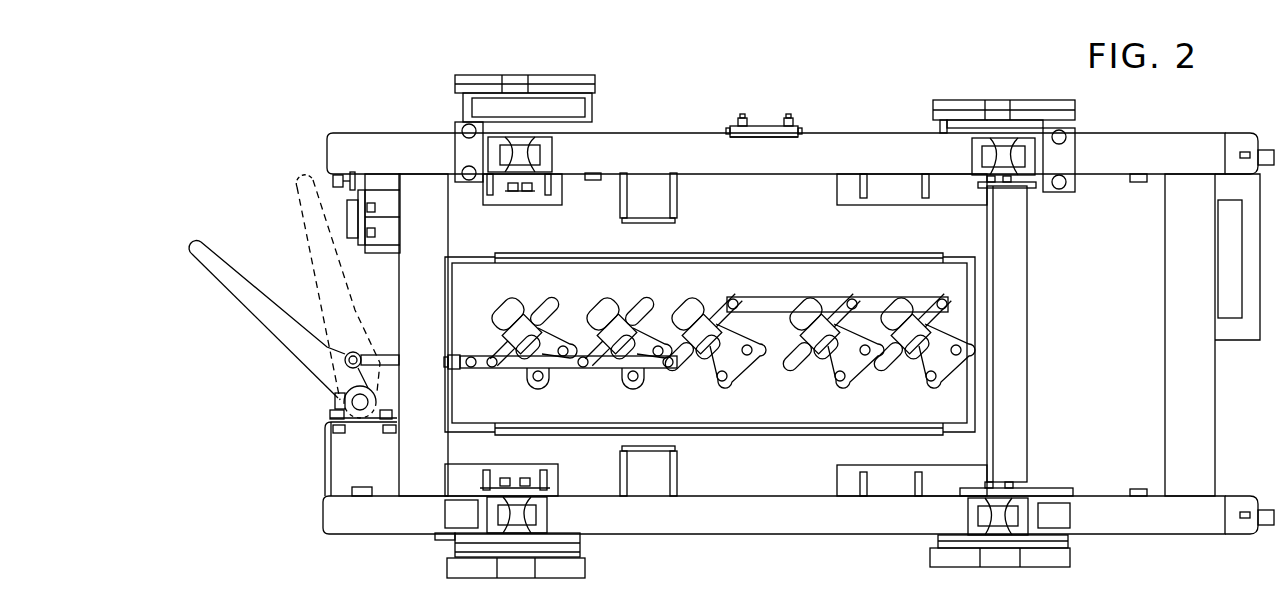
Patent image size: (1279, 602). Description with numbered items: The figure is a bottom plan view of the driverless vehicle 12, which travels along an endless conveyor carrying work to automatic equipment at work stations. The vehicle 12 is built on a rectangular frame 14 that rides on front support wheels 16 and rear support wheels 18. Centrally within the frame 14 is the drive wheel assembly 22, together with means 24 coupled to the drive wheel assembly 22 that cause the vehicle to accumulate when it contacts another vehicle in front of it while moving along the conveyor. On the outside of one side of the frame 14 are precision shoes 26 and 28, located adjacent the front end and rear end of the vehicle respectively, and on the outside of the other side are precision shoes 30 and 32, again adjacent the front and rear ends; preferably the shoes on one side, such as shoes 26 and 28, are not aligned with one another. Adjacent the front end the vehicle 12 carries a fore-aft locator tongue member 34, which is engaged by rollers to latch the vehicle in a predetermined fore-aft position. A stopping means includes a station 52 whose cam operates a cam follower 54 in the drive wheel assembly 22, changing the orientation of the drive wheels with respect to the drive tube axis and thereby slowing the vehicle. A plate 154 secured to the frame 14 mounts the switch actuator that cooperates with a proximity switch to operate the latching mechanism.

The vehicle 12 is at (1187, 125).
The frame 14 is at (727, 168).
The front support wheels 16 is at (538, 151).
The rear support wheels 18 is at (990, 158).
The drive wheel assembly 22 is at (518, 291).
The means for causing accumulation 24 is at (266, 348).
The precision shoe 26 is at (560, 573).
The precision shoe 28 is at (1012, 562).
The precision shoe 30 is at (553, 75).
The precision shoe 32 is at (1012, 100).
The fore-aft locator tongue member 34 is at (350, 224).
The station 52 is at (786, 140).
The cam follower 54 is at (727, 380).
The plate 154 is at (768, 126).